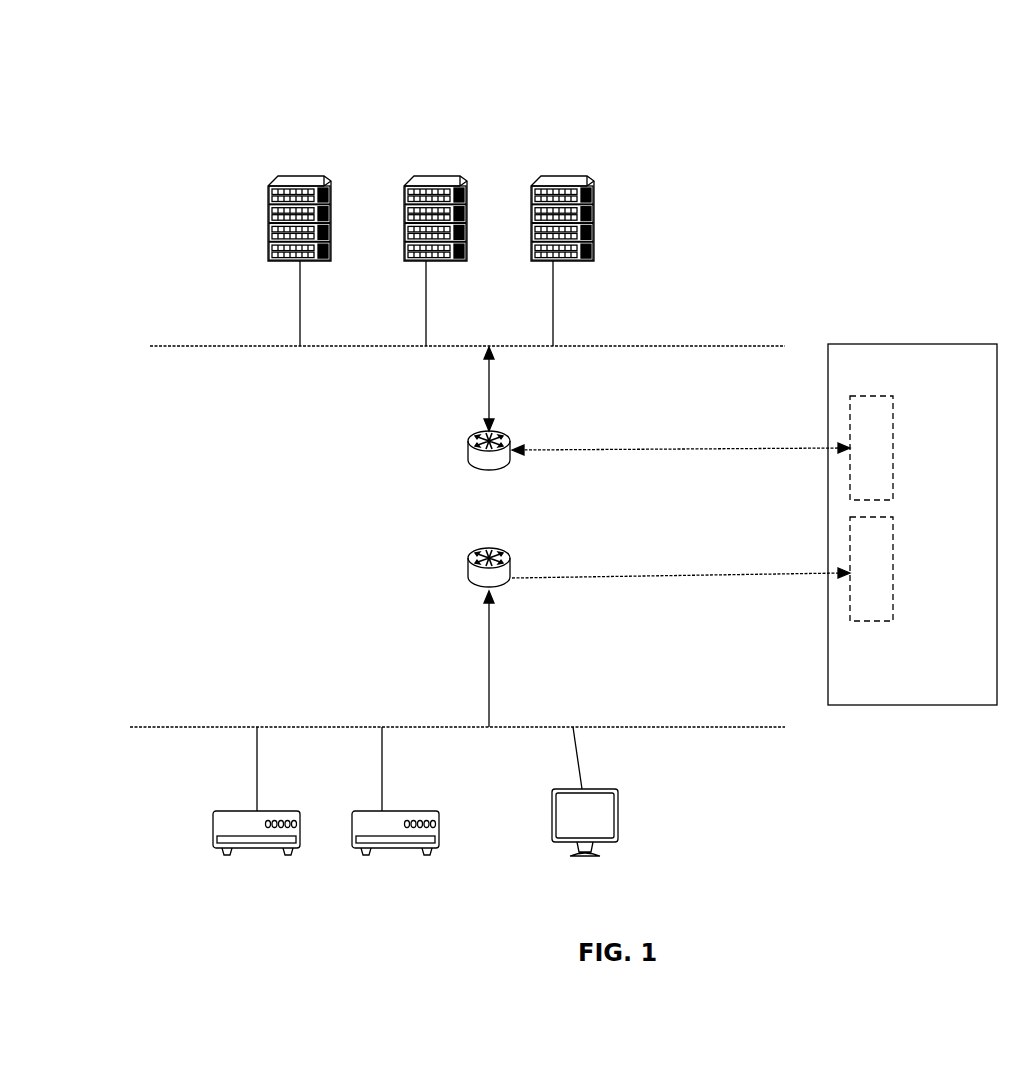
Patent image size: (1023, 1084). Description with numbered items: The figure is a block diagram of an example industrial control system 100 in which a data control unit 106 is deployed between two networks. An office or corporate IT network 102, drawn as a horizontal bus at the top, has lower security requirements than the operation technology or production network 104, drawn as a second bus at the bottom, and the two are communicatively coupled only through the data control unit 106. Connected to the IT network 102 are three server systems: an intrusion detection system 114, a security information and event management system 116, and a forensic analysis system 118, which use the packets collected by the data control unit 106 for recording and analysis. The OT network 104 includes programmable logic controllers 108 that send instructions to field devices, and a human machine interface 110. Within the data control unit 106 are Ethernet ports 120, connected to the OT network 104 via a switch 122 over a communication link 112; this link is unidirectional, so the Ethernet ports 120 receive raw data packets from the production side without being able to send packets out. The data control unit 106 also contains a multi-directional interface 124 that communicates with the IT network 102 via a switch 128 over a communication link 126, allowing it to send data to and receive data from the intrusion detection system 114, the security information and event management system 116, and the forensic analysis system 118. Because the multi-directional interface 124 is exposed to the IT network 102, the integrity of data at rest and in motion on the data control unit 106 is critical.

The industrial control system 100 is at (810, 106).
The IT network 102 is at (192, 346).
The OT network 104 is at (165, 727).
The data control unit 106 is at (843, 377).
The programmable logic controller 108 is at (224, 820).
The human machine interface 110 is at (552, 801).
The communication link 112 is at (638, 576).
The intrusion detection system 114 is at (280, 195).
The security information and event management system 116 is at (437, 193).
The forensic analysis system 118 is at (575, 193).
The Ethernet ports 120 is at (851, 552).
The switch 122 is at (468, 558).
The multi-directional interface 124 is at (852, 422).
The communication link 126 is at (663, 452).
The switch 128 is at (468, 443).